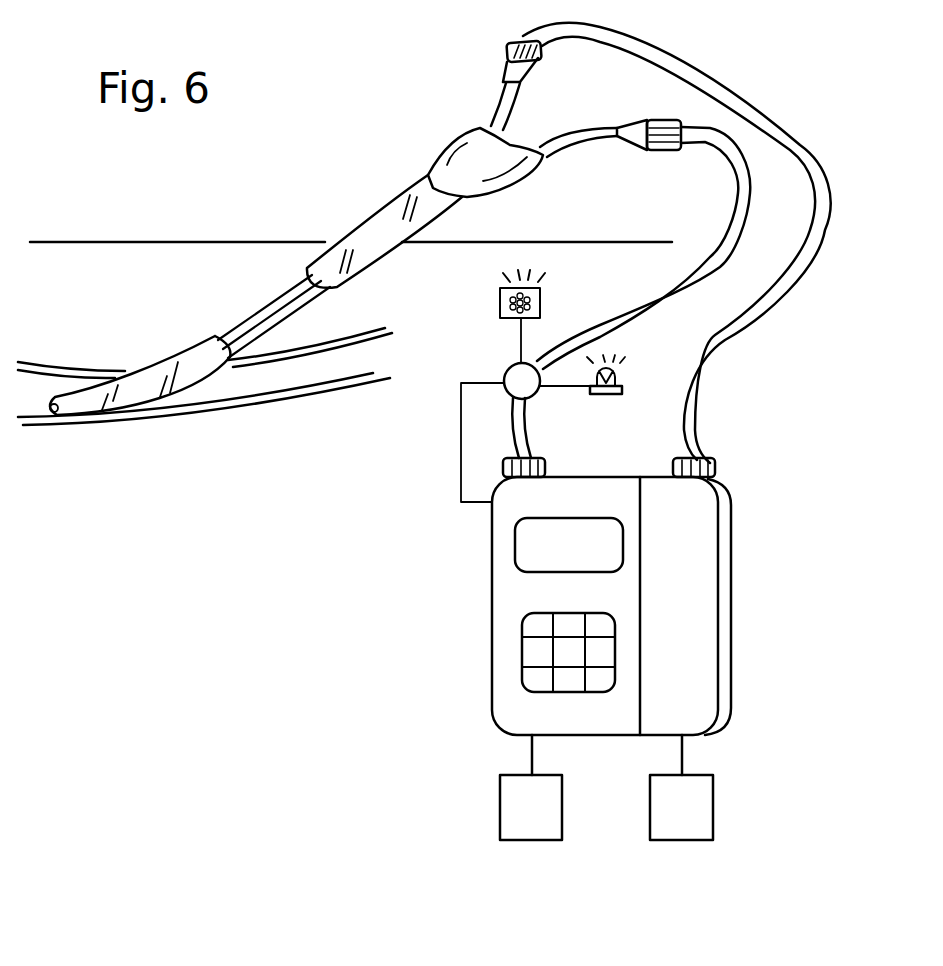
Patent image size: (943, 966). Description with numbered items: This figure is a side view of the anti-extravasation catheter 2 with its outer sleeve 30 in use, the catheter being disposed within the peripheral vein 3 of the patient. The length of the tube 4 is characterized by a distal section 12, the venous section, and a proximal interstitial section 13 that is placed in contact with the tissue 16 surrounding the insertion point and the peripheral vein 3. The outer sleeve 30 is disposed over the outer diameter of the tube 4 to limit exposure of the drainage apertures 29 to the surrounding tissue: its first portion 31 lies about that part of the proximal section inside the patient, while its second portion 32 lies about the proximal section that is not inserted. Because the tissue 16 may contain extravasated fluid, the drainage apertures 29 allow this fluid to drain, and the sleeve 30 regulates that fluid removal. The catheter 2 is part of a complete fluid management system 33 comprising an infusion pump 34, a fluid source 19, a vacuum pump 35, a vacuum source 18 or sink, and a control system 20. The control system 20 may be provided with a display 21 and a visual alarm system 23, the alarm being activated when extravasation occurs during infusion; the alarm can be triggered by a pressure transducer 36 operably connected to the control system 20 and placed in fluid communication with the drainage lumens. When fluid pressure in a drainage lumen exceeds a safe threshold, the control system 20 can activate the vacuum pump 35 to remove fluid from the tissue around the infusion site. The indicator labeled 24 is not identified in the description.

The anti-extravasation catheter 2 is at (396, 85).
The peripheral vein 3 is at (53, 367).
The tube 4 is at (287, 283).
The distal section 12 is at (207, 394).
The proximal interstitial section 13 is at (422, 283).
The tissue 16 is at (168, 293).
The vacuum source 18 is at (522, 837).
The fluid source 19 is at (697, 837).
The control system 20 is at (538, 652).
The display 21 is at (540, 532).
The visual alarm system 23 is at (540, 300).
The indicator light 24 is at (603, 400).
The drainage apertures 29 is at (250, 330).
The outer sleeve 30 is at (383, 213).
The first portion of outer sleeve 31 is at (368, 285).
The second portion of outer sleeve 32 is at (470, 217).
The fluid management system 33 is at (376, 800).
The infusion pump 34 is at (700, 543).
The vacuum pump 35 is at (515, 590).
The pressure transducer 36 is at (518, 373).